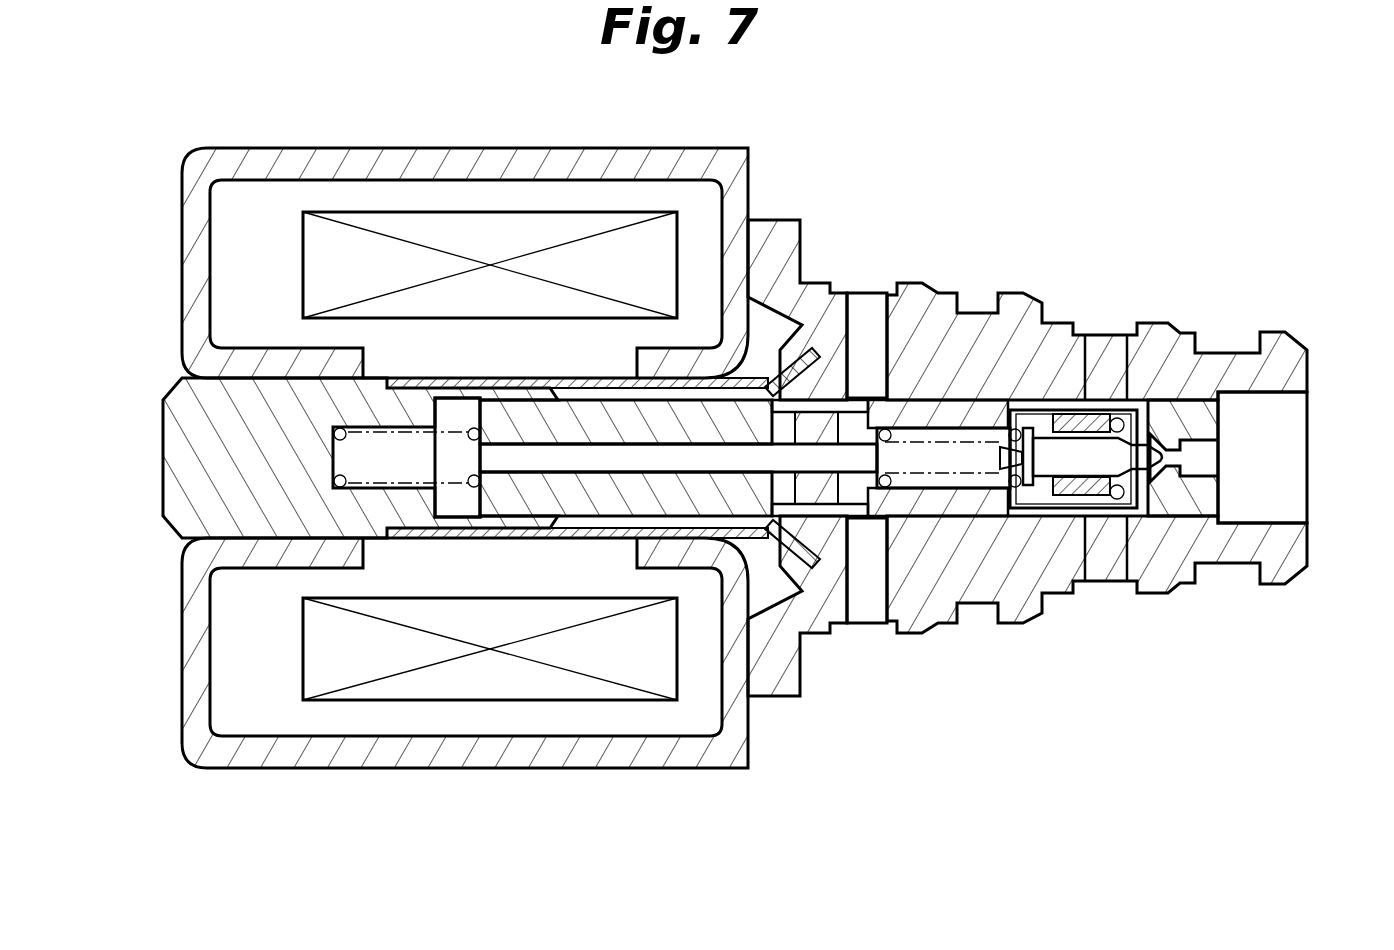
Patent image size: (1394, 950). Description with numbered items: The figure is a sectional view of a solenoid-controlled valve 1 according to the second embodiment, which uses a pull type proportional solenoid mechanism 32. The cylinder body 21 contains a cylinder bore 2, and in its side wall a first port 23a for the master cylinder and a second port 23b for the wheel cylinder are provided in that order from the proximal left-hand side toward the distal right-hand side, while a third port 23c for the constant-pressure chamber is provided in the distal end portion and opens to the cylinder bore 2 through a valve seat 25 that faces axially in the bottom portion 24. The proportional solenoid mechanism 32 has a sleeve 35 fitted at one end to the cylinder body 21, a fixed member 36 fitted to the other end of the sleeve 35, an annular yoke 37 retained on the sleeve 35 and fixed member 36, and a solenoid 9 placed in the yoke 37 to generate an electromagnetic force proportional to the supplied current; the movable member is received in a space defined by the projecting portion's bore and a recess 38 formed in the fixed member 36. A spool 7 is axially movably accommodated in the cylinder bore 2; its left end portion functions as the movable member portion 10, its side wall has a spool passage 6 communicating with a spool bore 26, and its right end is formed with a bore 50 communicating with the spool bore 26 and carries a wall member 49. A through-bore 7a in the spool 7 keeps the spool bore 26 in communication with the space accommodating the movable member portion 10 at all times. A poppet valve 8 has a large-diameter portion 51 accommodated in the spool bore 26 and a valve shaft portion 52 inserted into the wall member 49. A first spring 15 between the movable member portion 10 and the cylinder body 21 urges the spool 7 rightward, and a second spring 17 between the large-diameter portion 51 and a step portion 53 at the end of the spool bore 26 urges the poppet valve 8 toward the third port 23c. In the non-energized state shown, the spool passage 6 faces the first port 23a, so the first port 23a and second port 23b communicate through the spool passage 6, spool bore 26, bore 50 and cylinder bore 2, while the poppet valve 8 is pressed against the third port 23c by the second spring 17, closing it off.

The solenoid-controlled valve 1 is at (212, 786).
The cylinder bore 2 is at (1220, 545).
The spool passage 6 is at (818, 492).
The spool 7 is at (1005, 520).
The through-bore 7a is at (611, 450).
The poppet valve 8 is at (1062, 425).
The solenoid 9 is at (473, 228).
The movable member portion 10 is at (597, 490).
The first spring 15 is at (345, 458).
The second spring 17 is at (965, 400).
The cylinder body 21 is at (1050, 340).
The first port 23a is at (885, 520).
The second port 23b is at (1125, 515).
The third port 23c is at (1200, 467).
The bottom portion 24 is at (1270, 348).
The valve seat 25 is at (1210, 495).
The spool bore 26 is at (945, 450).
The proportional solenoid mechanism 32 is at (336, 38).
The sleeve 35 is at (530, 380).
The fixed member 36 is at (215, 510).
The yoke 37 is at (415, 160).
The recess 38 is at (472, 522).
The wall member 49 is at (1095, 505).
The bore 50 is at (985, 607).
The large-diameter portion 51 is at (1093, 452).
The valve shaft portion 52 is at (1178, 400).
The step portion 53 is at (912, 430).